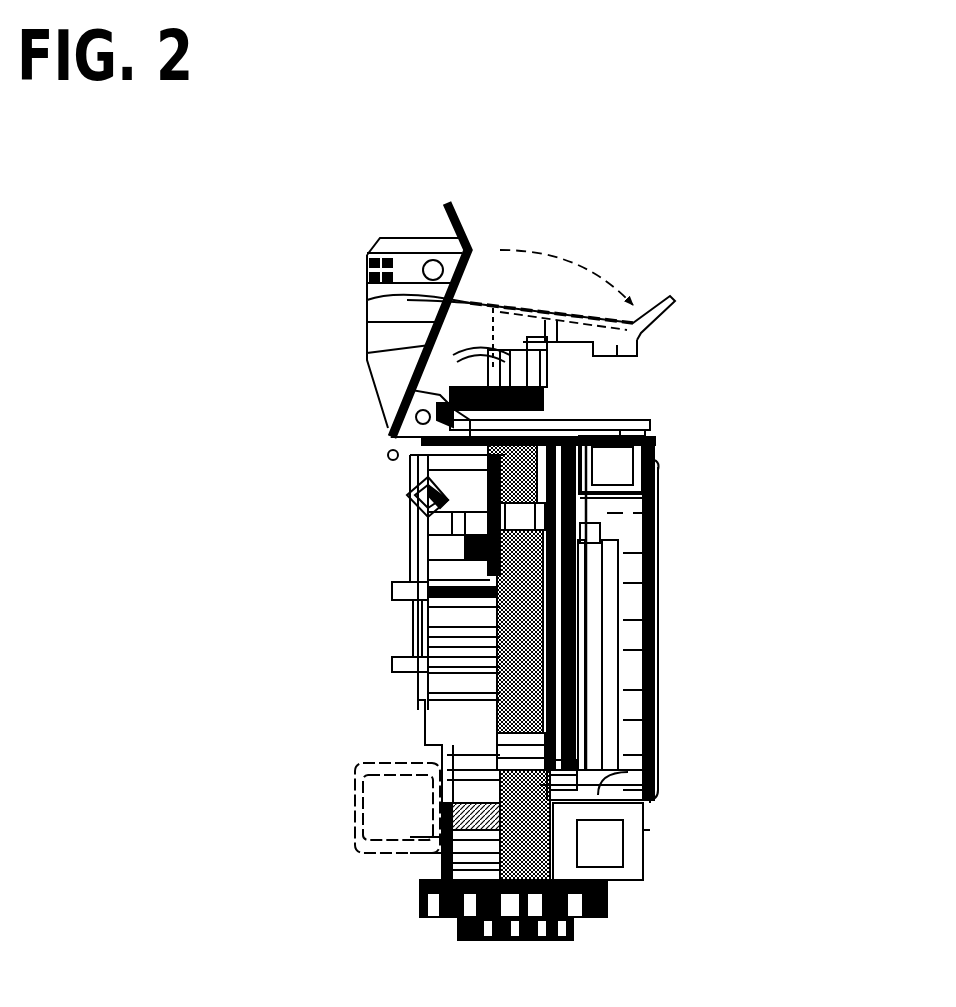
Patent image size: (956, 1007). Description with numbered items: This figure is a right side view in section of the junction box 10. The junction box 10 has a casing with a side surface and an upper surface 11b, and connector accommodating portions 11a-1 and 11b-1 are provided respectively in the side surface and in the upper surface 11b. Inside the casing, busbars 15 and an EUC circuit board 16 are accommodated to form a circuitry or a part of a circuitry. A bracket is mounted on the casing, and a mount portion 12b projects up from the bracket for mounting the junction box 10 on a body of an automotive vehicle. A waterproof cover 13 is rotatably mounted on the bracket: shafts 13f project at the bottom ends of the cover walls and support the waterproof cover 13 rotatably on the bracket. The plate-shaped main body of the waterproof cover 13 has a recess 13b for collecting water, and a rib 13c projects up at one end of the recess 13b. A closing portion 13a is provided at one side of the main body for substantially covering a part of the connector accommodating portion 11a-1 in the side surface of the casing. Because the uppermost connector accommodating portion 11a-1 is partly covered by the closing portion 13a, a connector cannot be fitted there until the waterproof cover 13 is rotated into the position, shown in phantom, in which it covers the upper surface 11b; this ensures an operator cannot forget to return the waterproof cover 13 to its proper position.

The junction box 10 is at (672, 645).
The connector accommodating portion 11a-1 is at (407, 470).
The upper surface 11b is at (567, 423).
The connector accommodating portion 11b-1 is at (627, 418).
The mount portion 12b is at (382, 238).
The waterproof cover 13 is at (388, 408).
The closing portion 13a is at (388, 448).
The recess 13b is at (477, 242).
The rib 13c is at (455, 222).
The shafts 13f is at (460, 363).
The busbars 15 is at (470, 628).
The EUC circuit board 16 is at (630, 772).